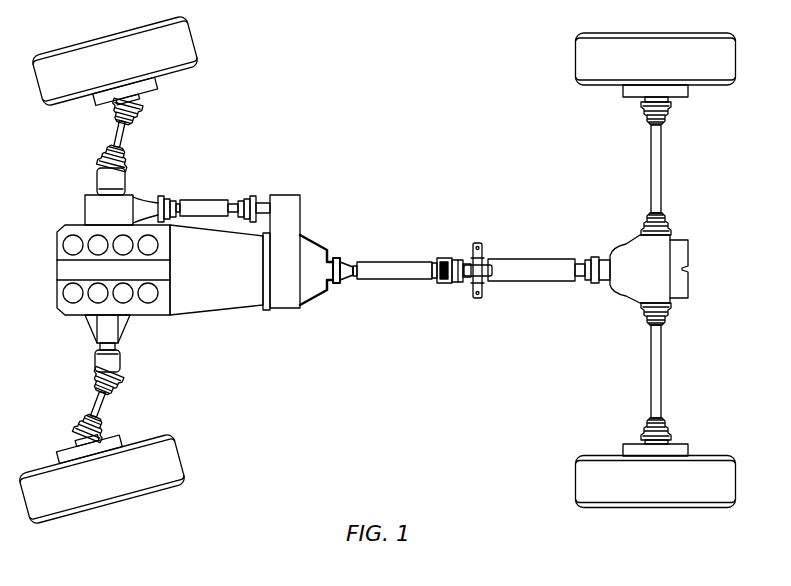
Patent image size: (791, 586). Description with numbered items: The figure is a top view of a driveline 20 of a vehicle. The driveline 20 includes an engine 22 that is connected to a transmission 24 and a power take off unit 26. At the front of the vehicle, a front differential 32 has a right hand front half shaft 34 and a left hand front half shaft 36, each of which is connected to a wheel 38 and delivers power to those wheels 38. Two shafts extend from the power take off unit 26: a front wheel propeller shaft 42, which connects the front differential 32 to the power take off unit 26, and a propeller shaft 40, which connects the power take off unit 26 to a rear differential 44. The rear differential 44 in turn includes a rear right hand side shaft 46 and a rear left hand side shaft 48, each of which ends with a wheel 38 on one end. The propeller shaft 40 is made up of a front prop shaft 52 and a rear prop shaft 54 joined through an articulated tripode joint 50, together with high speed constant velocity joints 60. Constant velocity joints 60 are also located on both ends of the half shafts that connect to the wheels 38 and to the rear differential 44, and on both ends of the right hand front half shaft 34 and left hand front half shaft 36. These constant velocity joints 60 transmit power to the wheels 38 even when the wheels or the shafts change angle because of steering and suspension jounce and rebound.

The driveline 20 is at (388, 145).
The engine 22 is at (70, 268).
The transmission 24 is at (213, 298).
The power take off unit 26 is at (290, 300).
The front differential 32 is at (128, 204).
The right hand front half shaft 34 is at (118, 138).
The left hand front half shaft 36 is at (93, 400).
The wheel 38 is at (187, 43).
The propeller shaft 40 is at (466, 247).
The front wheel propeller shaft 42 is at (205, 207).
The rear differential 44 is at (660, 277).
The rear right hand side shaft 46 is at (656, 153).
The rear left hand side shaft 48 is at (656, 381).
The articulated tripode joint 50 is at (450, 262).
The front prop shaft 52 is at (404, 283).
The rear prop shaft 54 is at (515, 264).
The constant velocity joint 60 is at (137, 112).